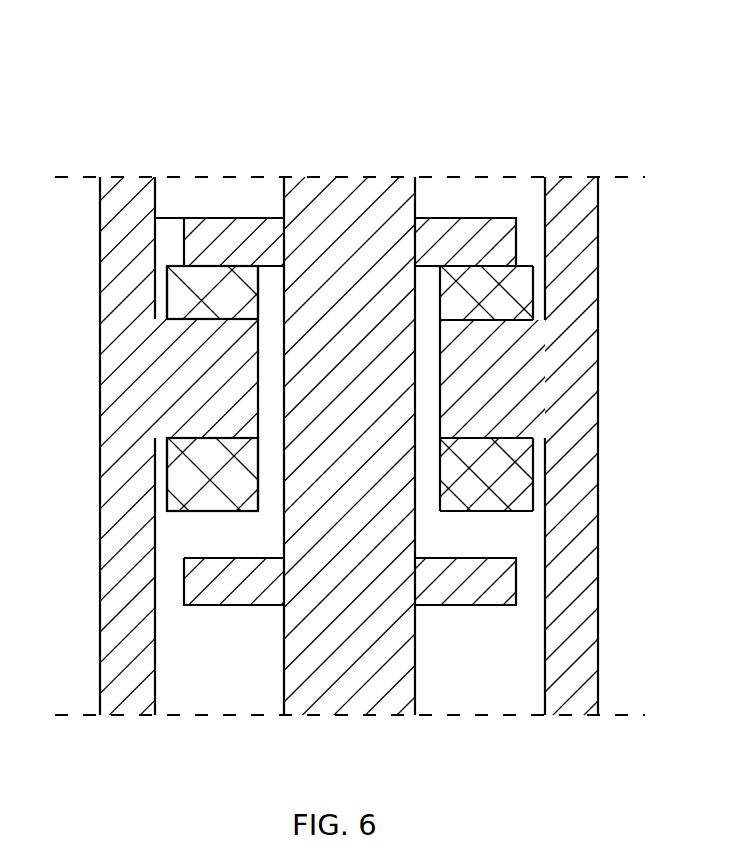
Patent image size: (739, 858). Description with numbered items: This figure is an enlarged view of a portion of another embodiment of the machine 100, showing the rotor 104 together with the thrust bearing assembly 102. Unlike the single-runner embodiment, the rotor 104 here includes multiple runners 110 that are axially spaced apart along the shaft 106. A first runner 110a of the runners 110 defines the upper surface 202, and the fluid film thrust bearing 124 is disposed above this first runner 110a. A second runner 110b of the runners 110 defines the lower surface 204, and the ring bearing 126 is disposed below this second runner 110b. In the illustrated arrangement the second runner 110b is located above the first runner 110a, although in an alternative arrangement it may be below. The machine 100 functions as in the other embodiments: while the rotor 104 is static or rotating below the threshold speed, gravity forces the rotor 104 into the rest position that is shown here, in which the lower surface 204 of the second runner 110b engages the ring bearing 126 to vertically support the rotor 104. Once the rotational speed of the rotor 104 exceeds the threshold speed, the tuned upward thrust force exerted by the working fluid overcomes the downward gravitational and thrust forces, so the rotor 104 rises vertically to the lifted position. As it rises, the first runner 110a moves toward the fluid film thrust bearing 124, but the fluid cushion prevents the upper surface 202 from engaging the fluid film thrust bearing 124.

The machine 100 is at (577, 68).
The thrust bearing assembly 102 is at (605, 255).
The rotor 104 is at (430, 198).
The shaft 106 is at (312, 378).
The runners 110 is at (369, 445).
The first runner 110a is at (190, 590).
The second runner 110b is at (192, 247).
The fluid film thrust bearing 124 is at (187, 482).
The ring bearing 126 is at (181, 290).
The upper surface 202 is at (195, 558).
The lower surface 204 is at (213, 266).